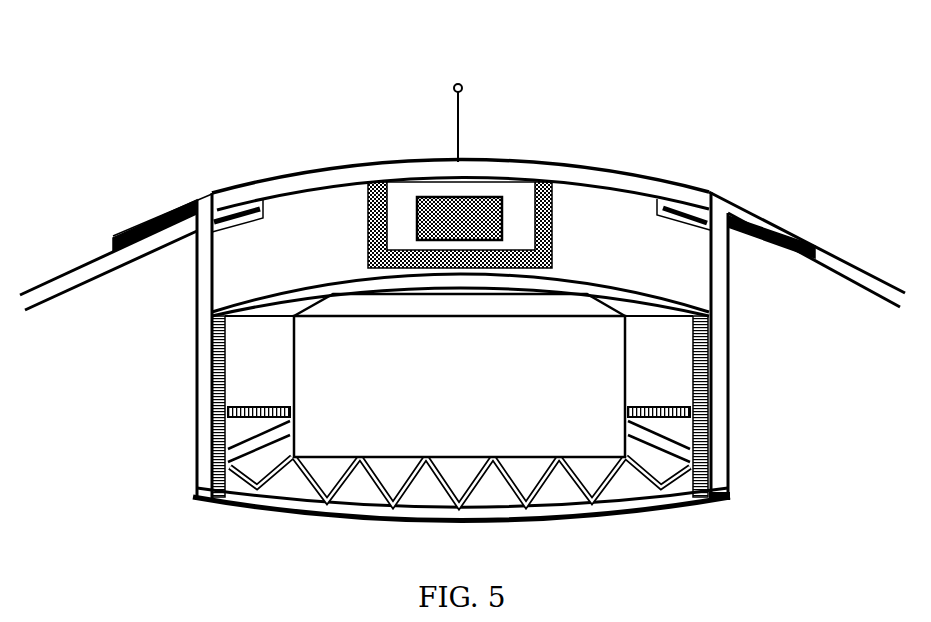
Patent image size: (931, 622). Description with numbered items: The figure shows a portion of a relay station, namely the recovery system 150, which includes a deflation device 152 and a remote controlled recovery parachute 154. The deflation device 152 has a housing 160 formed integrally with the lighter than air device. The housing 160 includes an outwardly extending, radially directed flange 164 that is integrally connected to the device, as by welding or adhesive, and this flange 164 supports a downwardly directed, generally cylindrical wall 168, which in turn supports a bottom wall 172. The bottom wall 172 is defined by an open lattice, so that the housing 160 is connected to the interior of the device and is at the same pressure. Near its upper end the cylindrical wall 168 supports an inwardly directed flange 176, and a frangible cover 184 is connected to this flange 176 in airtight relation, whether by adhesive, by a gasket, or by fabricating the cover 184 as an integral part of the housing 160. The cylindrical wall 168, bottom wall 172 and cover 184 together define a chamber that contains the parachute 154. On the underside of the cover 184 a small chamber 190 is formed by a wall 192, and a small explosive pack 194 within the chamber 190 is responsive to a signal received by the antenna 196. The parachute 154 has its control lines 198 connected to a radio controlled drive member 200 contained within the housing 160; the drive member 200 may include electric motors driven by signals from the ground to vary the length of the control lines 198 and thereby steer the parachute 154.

The recovery system 150 is at (240, 87).
The deflation device 152 is at (608, 143).
The remote controlled recovery parachute 154 is at (467, 377).
The housing 160 is at (193, 377).
The flange 164 is at (150, 227).
The cylindrical wall 168 is at (202, 414).
The bottom wall 172 is at (685, 498).
The inwardly directed flange 176 is at (680, 215).
The frangible cover 184 is at (540, 162).
The small chamber 190 is at (405, 198).
The wall 192 is at (372, 207).
The small explosive pack 194 is at (473, 212).
The antenna 196 is at (461, 85).
The control lines 198 is at (244, 416).
The radio controlled drive member 200 is at (210, 342).